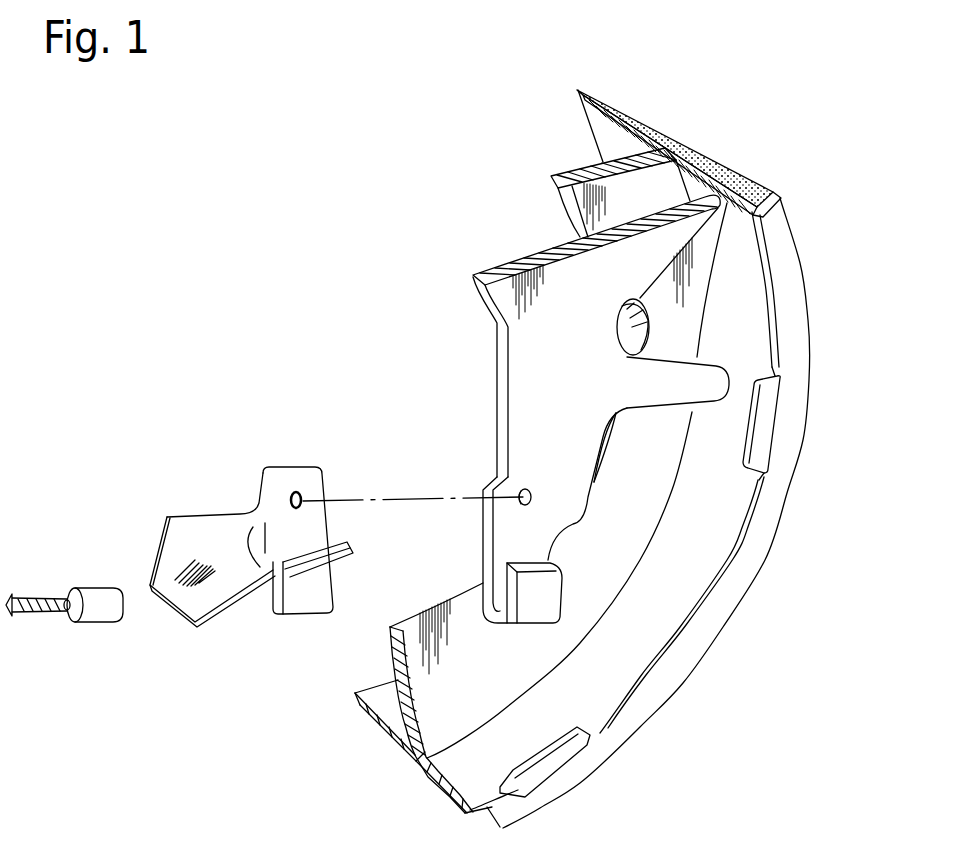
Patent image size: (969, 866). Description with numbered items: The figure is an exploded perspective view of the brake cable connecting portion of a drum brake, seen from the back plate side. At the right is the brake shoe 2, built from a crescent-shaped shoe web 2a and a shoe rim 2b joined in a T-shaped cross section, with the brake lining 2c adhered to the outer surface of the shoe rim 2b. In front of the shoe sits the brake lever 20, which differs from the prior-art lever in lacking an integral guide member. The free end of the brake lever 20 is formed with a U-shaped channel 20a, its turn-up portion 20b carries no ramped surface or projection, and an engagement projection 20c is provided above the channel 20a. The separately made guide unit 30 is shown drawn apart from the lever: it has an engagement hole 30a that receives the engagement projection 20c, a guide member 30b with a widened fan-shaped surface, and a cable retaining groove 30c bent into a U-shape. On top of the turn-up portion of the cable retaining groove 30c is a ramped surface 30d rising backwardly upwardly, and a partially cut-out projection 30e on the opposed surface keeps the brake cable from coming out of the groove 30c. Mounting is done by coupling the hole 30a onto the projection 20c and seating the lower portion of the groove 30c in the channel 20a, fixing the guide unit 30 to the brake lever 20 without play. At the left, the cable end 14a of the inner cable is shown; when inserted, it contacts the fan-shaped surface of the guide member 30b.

The brake shoe 2 is at (808, 261).
The shoe web 2a is at (565, 180).
The shoe rim 2b is at (586, 118).
The brake lining 2c is at (607, 86).
The brake lever 20 is at (486, 268).
The U-shaped channel 20a is at (565, 592).
The turn-up portion 20b is at (573, 620).
The engagement projection 20c is at (523, 490).
The guide unit 30 is at (249, 452).
The engagement hole 30a is at (301, 498).
The guide member 30b is at (193, 607).
The cable retaining groove 30c is at (266, 613).
The ramped surface 30d is at (348, 544).
The projection 30e is at (240, 597).
The cable end 14a is at (93, 614).